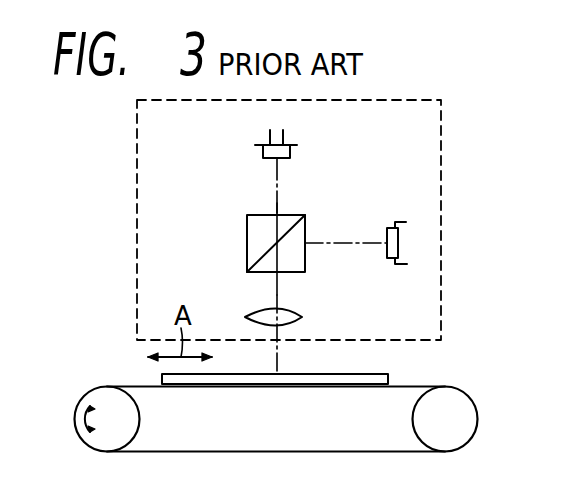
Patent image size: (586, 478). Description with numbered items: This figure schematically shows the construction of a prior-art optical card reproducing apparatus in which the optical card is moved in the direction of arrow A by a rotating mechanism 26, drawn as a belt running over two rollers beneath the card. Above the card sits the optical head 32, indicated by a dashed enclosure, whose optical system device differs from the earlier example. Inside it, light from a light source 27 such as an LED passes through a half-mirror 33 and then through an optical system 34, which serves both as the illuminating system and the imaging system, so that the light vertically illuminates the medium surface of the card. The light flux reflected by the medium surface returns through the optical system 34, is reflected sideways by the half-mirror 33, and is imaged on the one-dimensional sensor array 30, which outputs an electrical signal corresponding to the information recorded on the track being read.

The rotating mechanism 26 is at (100, 395).
The light source 27 is at (290, 152).
The one-dimensional sensor array 30 is at (386, 258).
The optical head 32 is at (442, 237).
The half-mirror 33 is at (305, 218).
The optical system 34 is at (302, 317).